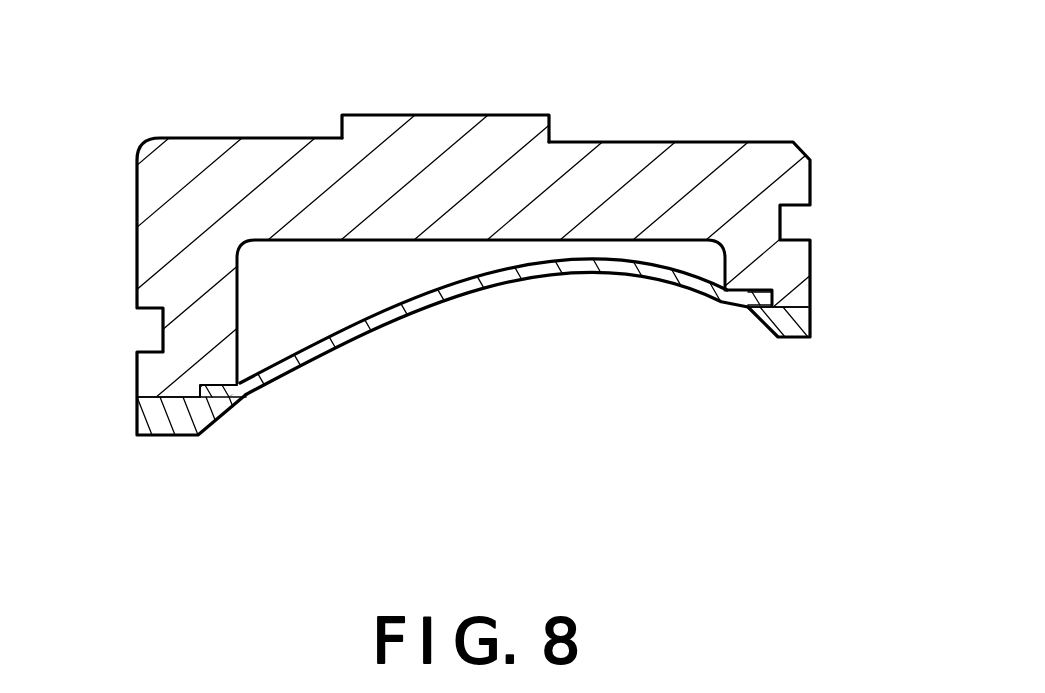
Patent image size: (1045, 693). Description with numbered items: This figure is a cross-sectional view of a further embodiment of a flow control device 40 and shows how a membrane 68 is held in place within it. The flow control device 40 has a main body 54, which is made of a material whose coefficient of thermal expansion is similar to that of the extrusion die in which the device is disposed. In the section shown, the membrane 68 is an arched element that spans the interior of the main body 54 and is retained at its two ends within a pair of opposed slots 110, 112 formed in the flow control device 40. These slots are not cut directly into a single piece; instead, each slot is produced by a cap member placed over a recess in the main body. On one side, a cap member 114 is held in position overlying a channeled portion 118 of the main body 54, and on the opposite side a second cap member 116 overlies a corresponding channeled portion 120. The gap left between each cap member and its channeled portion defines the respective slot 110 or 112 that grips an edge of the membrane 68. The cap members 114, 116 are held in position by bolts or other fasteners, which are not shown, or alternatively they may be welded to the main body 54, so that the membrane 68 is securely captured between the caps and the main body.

The flow control device 40 is at (170, 223).
The main body 54 is at (608, 158).
The membrane 68 is at (512, 275).
The slot 110 is at (242, 400).
The slot 112 is at (758, 296).
The cap member 114 is at (175, 437).
The cap member 116 is at (810, 323).
The channeled portion 118 is at (239, 349).
The channeled portion 120 is at (772, 293).